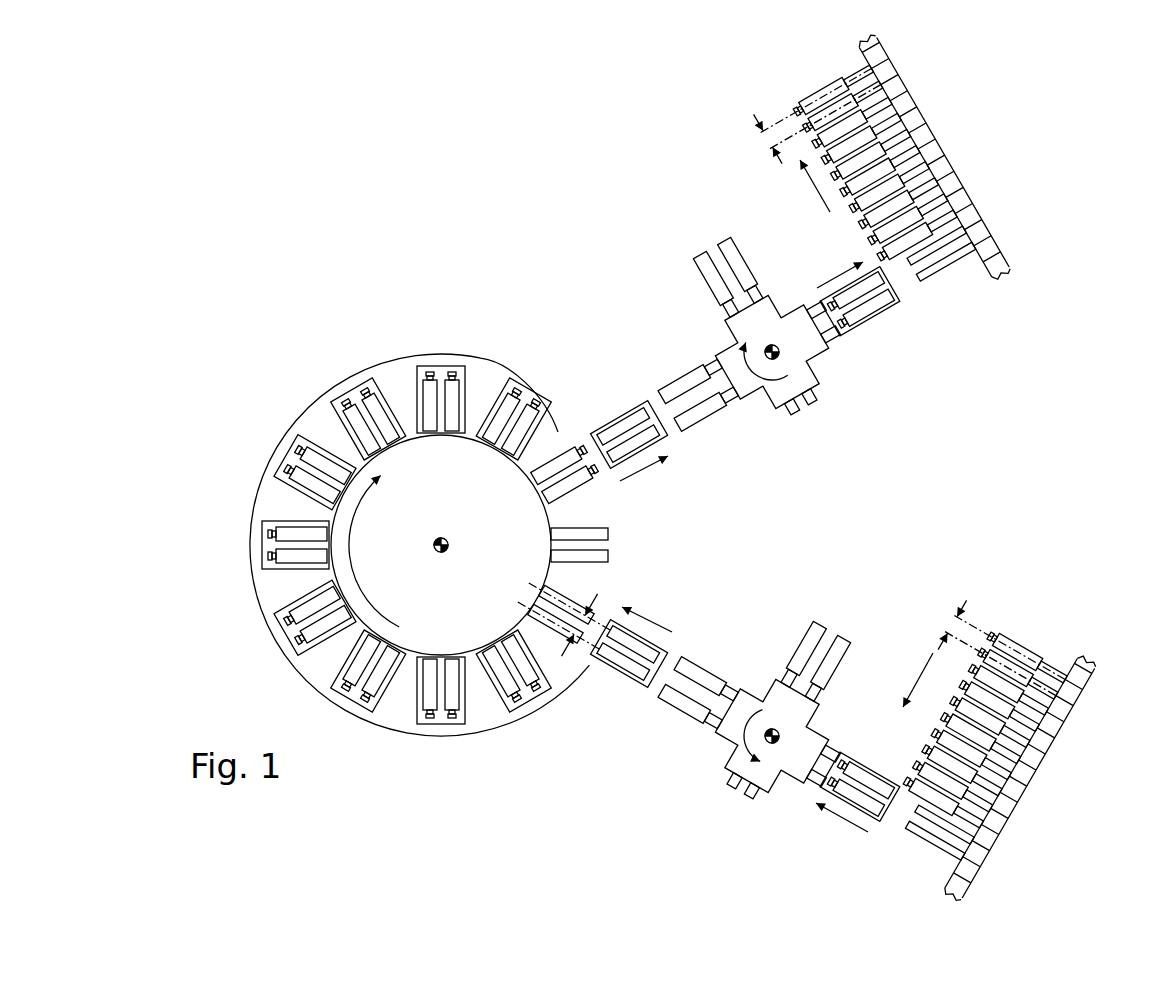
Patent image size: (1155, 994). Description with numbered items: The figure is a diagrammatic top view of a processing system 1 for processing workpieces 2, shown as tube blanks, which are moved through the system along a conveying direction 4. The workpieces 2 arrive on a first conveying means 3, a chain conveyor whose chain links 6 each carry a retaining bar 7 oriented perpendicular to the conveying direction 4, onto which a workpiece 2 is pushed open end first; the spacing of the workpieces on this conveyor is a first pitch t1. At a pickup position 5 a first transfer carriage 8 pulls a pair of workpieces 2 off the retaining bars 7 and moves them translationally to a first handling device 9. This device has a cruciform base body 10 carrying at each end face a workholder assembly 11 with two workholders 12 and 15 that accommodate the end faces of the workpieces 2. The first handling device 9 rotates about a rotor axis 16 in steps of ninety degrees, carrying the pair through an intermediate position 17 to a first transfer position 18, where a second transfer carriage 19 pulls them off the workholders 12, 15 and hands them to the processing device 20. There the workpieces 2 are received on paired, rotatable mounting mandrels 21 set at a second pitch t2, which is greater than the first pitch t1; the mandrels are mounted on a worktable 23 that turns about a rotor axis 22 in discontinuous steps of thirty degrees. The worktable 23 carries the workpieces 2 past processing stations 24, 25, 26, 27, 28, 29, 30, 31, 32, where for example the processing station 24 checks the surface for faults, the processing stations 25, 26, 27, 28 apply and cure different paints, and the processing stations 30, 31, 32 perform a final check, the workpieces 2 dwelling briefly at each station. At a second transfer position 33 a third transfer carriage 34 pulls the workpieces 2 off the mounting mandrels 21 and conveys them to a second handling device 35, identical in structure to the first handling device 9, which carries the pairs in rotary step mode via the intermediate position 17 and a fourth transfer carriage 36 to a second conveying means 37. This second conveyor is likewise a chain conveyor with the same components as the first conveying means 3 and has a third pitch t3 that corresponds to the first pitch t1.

The processing system 1 is at (300, 250).
The workpieces 2 is at (1007, 640).
The first conveying means 3 is at (998, 742).
The conveying direction 4 is at (308, 405).
The pickup position 5 is at (892, 840).
The chain link 6 is at (1066, 704).
The retaining bar 7 is at (939, 845).
The first transfer carriage 8 is at (873, 770).
The first handling device 9 is at (757, 680).
The cruciform base body 10 is at (740, 327).
The workholder assembly 11 is at (834, 735).
The workholder 12 is at (794, 418).
The workholder 15 is at (818, 402).
The rotor axis 16 is at (772, 360).
The intermediate position 17 is at (693, 246).
The first transfer position 18 is at (673, 719).
The second transfer carriage 19 is at (660, 653).
The processing device 20 is at (278, 500).
The mounting mandrels 21 is at (608, 531).
The rotor axis 22 is at (441, 536).
The worktable 23 is at (590, 425).
The processing station 24 is at (547, 690).
The processing station 25 is at (460, 724).
The processing station 26 is at (368, 710).
The processing station 27 is at (274, 617).
The processing station 28 is at (262, 530).
The processing station 29 is at (293, 436).
The processing station 30 is at (340, 393).
The processing station 31 is at (437, 362).
The processing station 32 is at (515, 375).
The second transfer position 33 is at (617, 388).
The third transfer carriage 34 is at (658, 431).
The second handling device 35 is at (836, 369).
The transfer holder 36 is at (893, 303).
The second conveying means 37 is at (953, 147).
The first pitch t1 is at (965, 606).
The second pitch t2 is at (595, 598).
The third pitch t3 is at (760, 131).